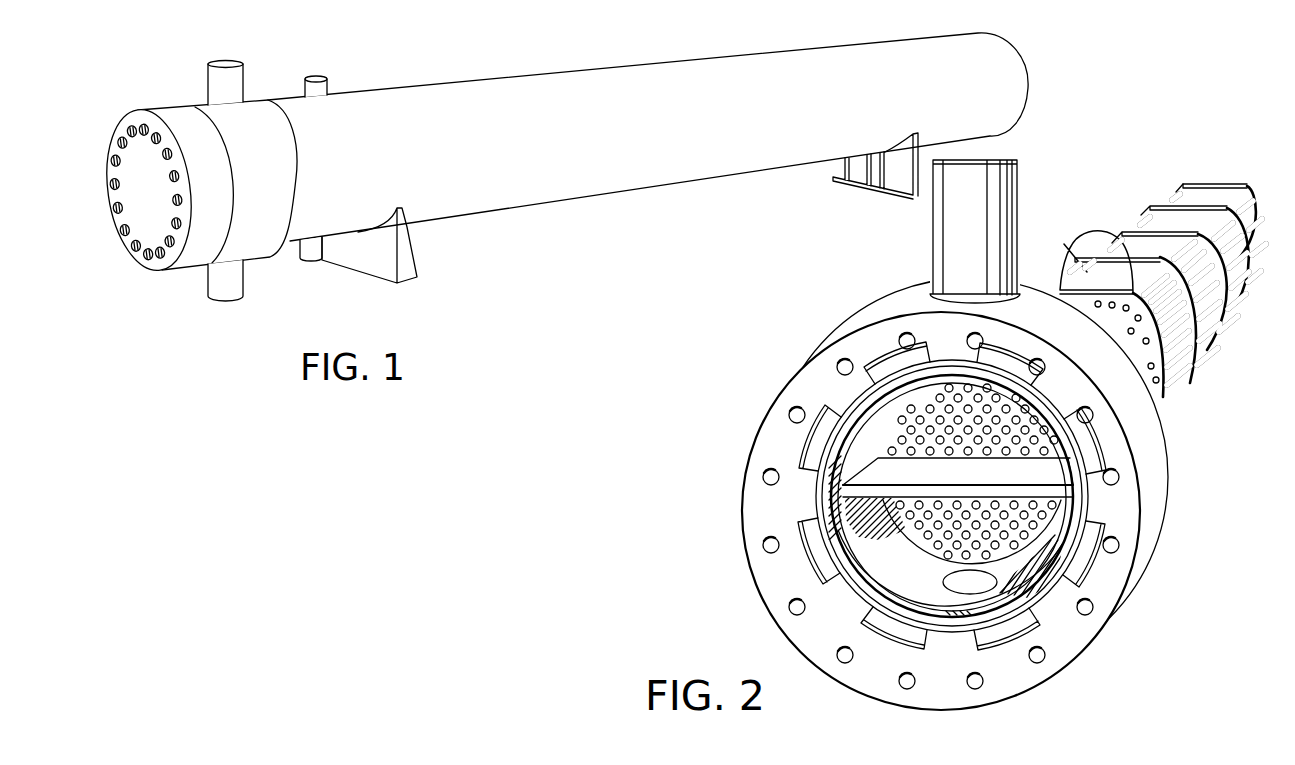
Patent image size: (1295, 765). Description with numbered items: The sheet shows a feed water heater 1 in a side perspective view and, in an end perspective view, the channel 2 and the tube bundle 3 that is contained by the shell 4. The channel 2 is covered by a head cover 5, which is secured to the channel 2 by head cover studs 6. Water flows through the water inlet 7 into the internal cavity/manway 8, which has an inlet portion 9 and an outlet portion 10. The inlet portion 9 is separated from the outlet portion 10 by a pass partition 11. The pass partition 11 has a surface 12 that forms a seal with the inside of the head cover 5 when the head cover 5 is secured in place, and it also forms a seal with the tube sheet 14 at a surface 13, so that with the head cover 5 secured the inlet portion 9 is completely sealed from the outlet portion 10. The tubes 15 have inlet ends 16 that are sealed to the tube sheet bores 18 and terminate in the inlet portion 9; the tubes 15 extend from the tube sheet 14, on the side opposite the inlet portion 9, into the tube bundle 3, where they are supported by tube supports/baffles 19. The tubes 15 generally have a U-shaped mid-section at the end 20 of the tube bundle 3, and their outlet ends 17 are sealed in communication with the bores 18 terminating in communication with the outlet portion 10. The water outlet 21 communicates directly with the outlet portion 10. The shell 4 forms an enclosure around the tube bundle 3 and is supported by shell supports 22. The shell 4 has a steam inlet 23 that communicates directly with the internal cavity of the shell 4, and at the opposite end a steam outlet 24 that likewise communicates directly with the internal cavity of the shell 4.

In FIG. 1, the heat exchanger 1 is at (551, 172).
In FIG. 1, the channel 2 is at (253, 248).
In FIG. 2, the channel 2 is at (1158, 465).
In FIG. 2, the tube bundle 3 is at (1159, 269).
In FIG. 1, the shell 4 is at (820, 60).
In FIG. 1, the head cover 5 is at (177, 115).
In FIG. 1, the head cover studs 6 is at (118, 152).
In FIG. 1, the water inlet 7 is at (240, 72).
In FIG. 2, the water inlet 7 is at (997, 182).
In FIG. 2, the internal cavity/manway 8 is at (835, 466).
In FIG. 2, the inlet portion 9 is at (880, 425).
In FIG. 2, the outlet portion 10 is at (886, 535).
In FIG. 2, the pass partition 11 is at (940, 483).
In FIG. 2, the surface 12 is at (1060, 488).
In FIG. 2, the surface 13 is at (1050, 441).
In FIG. 2, the tube sheet 14 is at (1043, 547).
In FIG. 2, the tubes 15 is at (1183, 343).
In FIG. 2, the inlet ends 16 is at (930, 392).
In FIG. 2, the outlet ends 17 is at (1060, 507).
In FIG. 2, the tube sheet bores 18 is at (897, 387).
In FIG. 2, the tube supports/baffles 19 is at (1068, 243).
In FIG. 2, the end 20 is at (1248, 184).
In FIG. 1, the water outlet 21 is at (232, 286).
In FIG. 1, the shell supports 22 is at (370, 258).
In FIG. 1, the steam inlet 23 is at (328, 87).
In FIG. 1, the steam outlet 24 is at (307, 258).